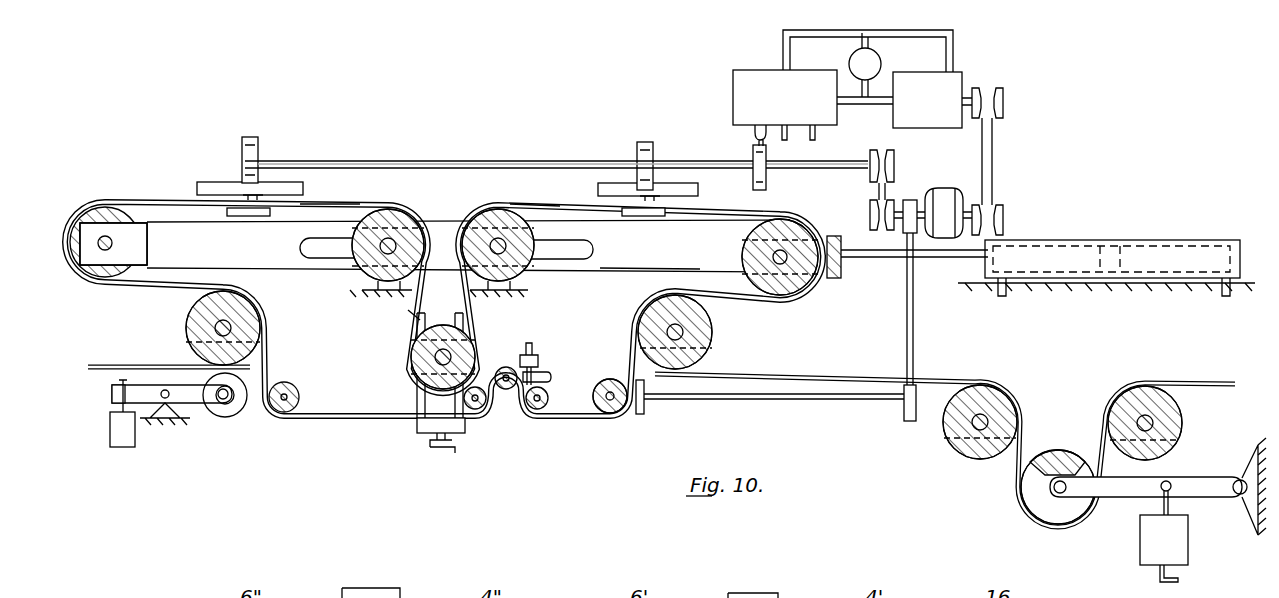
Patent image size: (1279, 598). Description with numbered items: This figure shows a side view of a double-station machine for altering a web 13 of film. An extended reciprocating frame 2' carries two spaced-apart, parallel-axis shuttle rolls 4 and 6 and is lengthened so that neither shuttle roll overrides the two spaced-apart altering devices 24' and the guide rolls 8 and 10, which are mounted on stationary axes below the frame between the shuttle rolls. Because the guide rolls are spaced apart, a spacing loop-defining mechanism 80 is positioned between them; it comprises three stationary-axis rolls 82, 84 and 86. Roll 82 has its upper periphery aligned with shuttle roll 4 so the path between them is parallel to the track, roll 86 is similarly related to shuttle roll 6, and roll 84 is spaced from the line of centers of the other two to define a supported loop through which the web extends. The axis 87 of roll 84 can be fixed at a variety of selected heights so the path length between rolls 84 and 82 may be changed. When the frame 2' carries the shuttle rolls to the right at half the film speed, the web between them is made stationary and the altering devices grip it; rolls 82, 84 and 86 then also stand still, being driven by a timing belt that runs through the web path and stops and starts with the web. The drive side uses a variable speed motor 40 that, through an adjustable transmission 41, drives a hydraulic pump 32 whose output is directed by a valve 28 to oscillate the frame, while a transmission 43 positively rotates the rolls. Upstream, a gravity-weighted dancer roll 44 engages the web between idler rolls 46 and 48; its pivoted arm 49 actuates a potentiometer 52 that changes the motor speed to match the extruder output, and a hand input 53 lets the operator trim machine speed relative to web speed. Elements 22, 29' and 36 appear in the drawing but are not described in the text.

The frame 2' is at (649, 294).
The shuttle roll 4 is at (808, 293).
The shuttle roll 6 is at (98, 214).
The guide roll 8 is at (704, 352).
The guide roll 10 is at (190, 323).
The web 13 is at (562, 206).
The slider block 22 is at (250, 218).
The altering device 24' is at (648, 167).
The valve 28 is at (752, 76).
The shaft 29' is at (556, 147).
The hydraulic pump 32 is at (950, 76).
The pressure regulator 36 is at (882, 66).
The variable speed drive motor 40 is at (945, 190).
The adjustable transmission 41 is at (993, 170).
The transmission 43 is at (916, 354).
The dancer roll 44 is at (1048, 516).
The idler roll 46 is at (968, 458).
The idler roll 48 is at (1124, 402).
The pivoted arm 49 is at (1096, 492).
The potentiometer 52 is at (1150, 554).
The hand input 53 is at (1162, 581).
The spacing loop-defining mechanism 80 is at (402, 321).
The roll 82 is at (528, 262).
The roll 84 is at (420, 348).
The roll 86 is at (367, 283).
The axis 87 is at (457, 355).